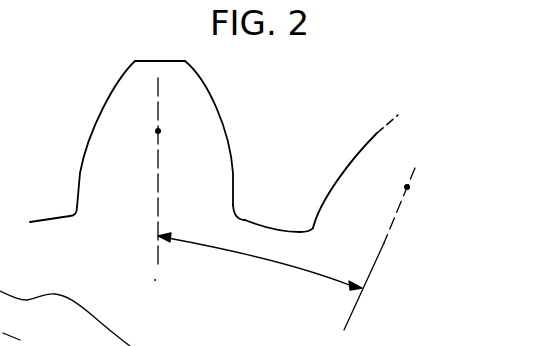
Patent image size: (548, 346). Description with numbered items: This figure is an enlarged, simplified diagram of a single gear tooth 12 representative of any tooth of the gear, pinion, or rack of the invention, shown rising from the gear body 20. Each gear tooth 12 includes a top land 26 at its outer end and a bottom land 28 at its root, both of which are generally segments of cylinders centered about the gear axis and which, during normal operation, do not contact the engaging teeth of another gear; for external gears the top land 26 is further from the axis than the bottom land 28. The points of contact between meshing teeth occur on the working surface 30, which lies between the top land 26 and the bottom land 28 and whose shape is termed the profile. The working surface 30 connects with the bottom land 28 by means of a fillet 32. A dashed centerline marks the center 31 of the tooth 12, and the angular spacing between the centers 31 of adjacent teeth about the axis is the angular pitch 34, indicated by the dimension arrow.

The gear tooth 12 is at (218, 87).
The gear body 20 is at (0, 325).
The top land 26 is at (148, 60).
The bottom land 28 is at (45, 218).
The working surface 30 is at (88, 132).
The center 31 is at (158, 131).
The fillet 32 is at (73, 212).
The angular pitch 34 is at (262, 259).